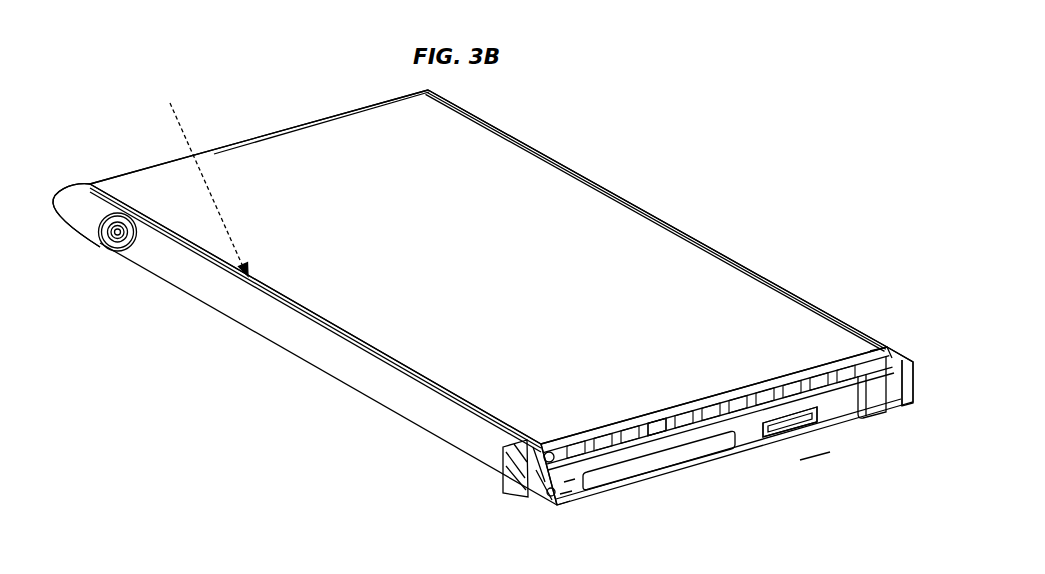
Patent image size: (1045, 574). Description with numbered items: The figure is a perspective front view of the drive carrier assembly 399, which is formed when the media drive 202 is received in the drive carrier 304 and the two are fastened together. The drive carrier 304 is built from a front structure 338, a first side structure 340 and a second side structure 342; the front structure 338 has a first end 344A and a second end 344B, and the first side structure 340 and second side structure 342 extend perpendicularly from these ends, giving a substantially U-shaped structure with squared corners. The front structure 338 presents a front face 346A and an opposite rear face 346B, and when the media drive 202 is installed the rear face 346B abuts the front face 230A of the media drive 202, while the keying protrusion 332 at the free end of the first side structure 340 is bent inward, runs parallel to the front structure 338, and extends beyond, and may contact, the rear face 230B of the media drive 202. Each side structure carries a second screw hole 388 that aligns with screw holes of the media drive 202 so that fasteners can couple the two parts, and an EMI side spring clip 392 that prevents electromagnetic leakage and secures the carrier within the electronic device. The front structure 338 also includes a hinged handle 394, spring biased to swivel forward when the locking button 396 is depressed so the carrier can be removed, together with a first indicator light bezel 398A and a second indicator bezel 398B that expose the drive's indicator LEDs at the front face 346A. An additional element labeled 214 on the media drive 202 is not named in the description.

The media drive 202 is at (482, 190).
The rear edge of display 214 is at (290, 127).
The front face of the media drive 230A is at (763, 374).
The rear face of the media drive 230B is at (220, 150).
The drive carrier 304 is at (170, 103).
The keying protrusion 332 is at (90, 182).
The front structure 338 is at (763, 400).
The first side structure 340 is at (262, 336).
The second side structure 342 is at (727, 252).
The first end 344A is at (550, 452).
The second end 344B is at (882, 347).
The front face 346A is at (803, 462).
The rear face 346B is at (663, 400).
The second screw hole 388 is at (126, 240).
The EMI side spring clip 392 is at (530, 460).
The hinged handle 394 is at (571, 494).
The locking button 396 is at (888, 395).
The first indicator light bezel 398A is at (774, 438).
The second indicator bezel 398B is at (812, 426).
The drive carrier assembly 399 is at (786, 58).